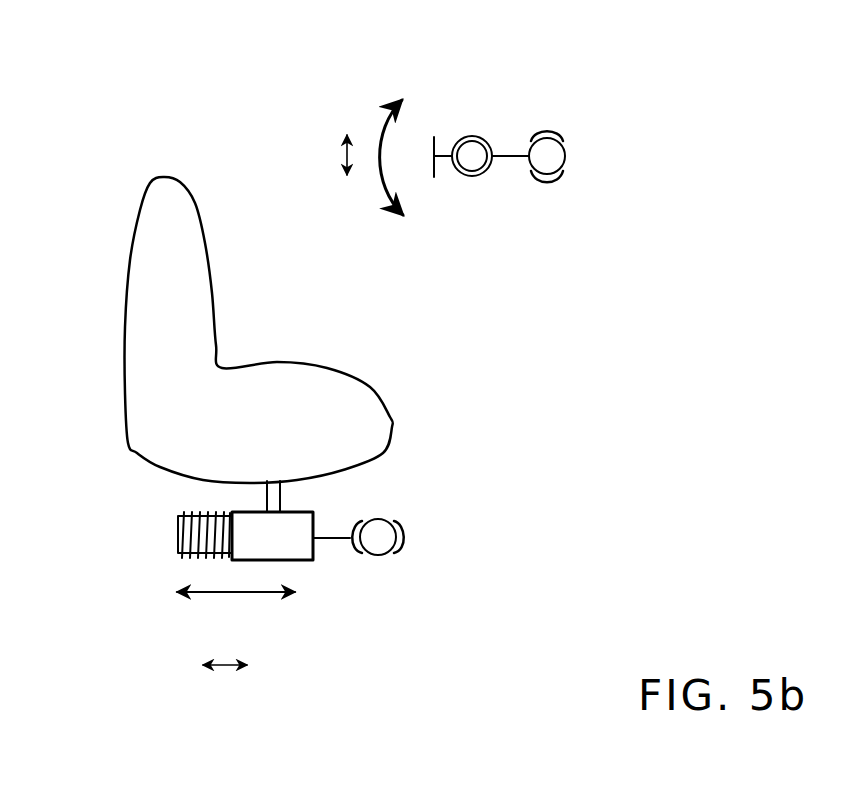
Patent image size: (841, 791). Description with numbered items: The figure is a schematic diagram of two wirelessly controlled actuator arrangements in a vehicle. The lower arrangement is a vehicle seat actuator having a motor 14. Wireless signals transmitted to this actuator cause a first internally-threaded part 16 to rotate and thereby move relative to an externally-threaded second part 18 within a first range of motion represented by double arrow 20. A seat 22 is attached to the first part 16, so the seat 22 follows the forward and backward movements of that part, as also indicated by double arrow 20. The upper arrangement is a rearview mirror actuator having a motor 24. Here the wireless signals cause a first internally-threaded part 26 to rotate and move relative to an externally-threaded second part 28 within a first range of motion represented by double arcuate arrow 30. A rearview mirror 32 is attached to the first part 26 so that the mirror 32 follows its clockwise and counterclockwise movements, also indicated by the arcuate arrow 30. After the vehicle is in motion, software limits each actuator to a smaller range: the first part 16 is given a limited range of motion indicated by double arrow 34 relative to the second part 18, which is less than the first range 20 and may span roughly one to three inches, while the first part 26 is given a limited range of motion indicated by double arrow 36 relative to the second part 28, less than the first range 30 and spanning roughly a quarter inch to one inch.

The motor 14 is at (382, 517).
The first internally-threaded part 16 is at (295, 553).
The externally-threaded second part 18 is at (177, 535).
The double arrow 20 is at (233, 592).
The seat 22 is at (277, 437).
The motor 24 is at (565, 157).
The first internally-threaded part 26 is at (472, 135).
The externally-threaded second part 28 is at (473, 158).
The double arcuate arrow 30 is at (378, 150).
The rearview mirror 32 is at (434, 170).
The double arrow 34 is at (223, 667).
The double arrow 36 is at (343, 158).